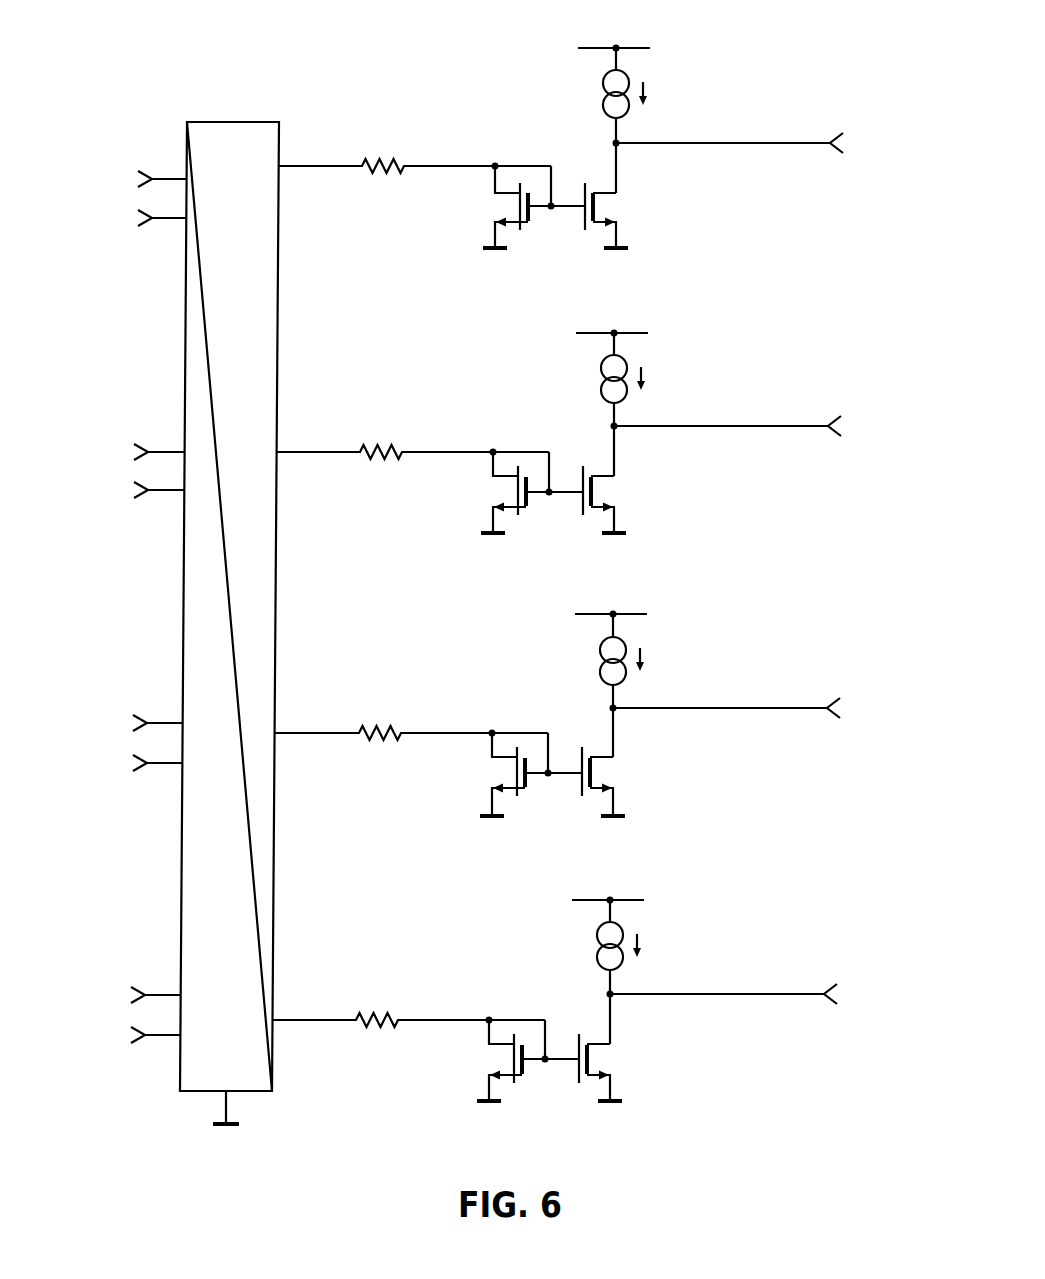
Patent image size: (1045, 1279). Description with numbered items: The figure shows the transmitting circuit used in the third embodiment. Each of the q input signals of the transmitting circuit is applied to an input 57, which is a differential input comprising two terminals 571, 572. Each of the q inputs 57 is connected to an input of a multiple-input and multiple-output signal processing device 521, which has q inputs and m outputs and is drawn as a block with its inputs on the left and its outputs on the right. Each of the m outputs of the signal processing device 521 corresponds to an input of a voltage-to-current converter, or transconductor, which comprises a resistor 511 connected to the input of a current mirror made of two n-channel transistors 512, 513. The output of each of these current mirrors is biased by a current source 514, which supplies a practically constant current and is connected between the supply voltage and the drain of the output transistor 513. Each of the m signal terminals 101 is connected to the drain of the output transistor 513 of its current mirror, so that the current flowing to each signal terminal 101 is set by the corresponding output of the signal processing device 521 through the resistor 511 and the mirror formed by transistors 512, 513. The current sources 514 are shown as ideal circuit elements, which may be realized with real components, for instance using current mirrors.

The multiple-input and multiple-output signal processing device 521 is at (230, 106).
The input 57 is at (85, 135).
The terminal 571 is at (130, 180).
The terminal 572 is at (130, 219).
The resistor 511 is at (381, 154).
The n-channel transistor 512 is at (470, 214).
The output transistor 513 is at (632, 214).
The current source 514 is at (655, 91).
The signal terminal 101 is at (855, 126).